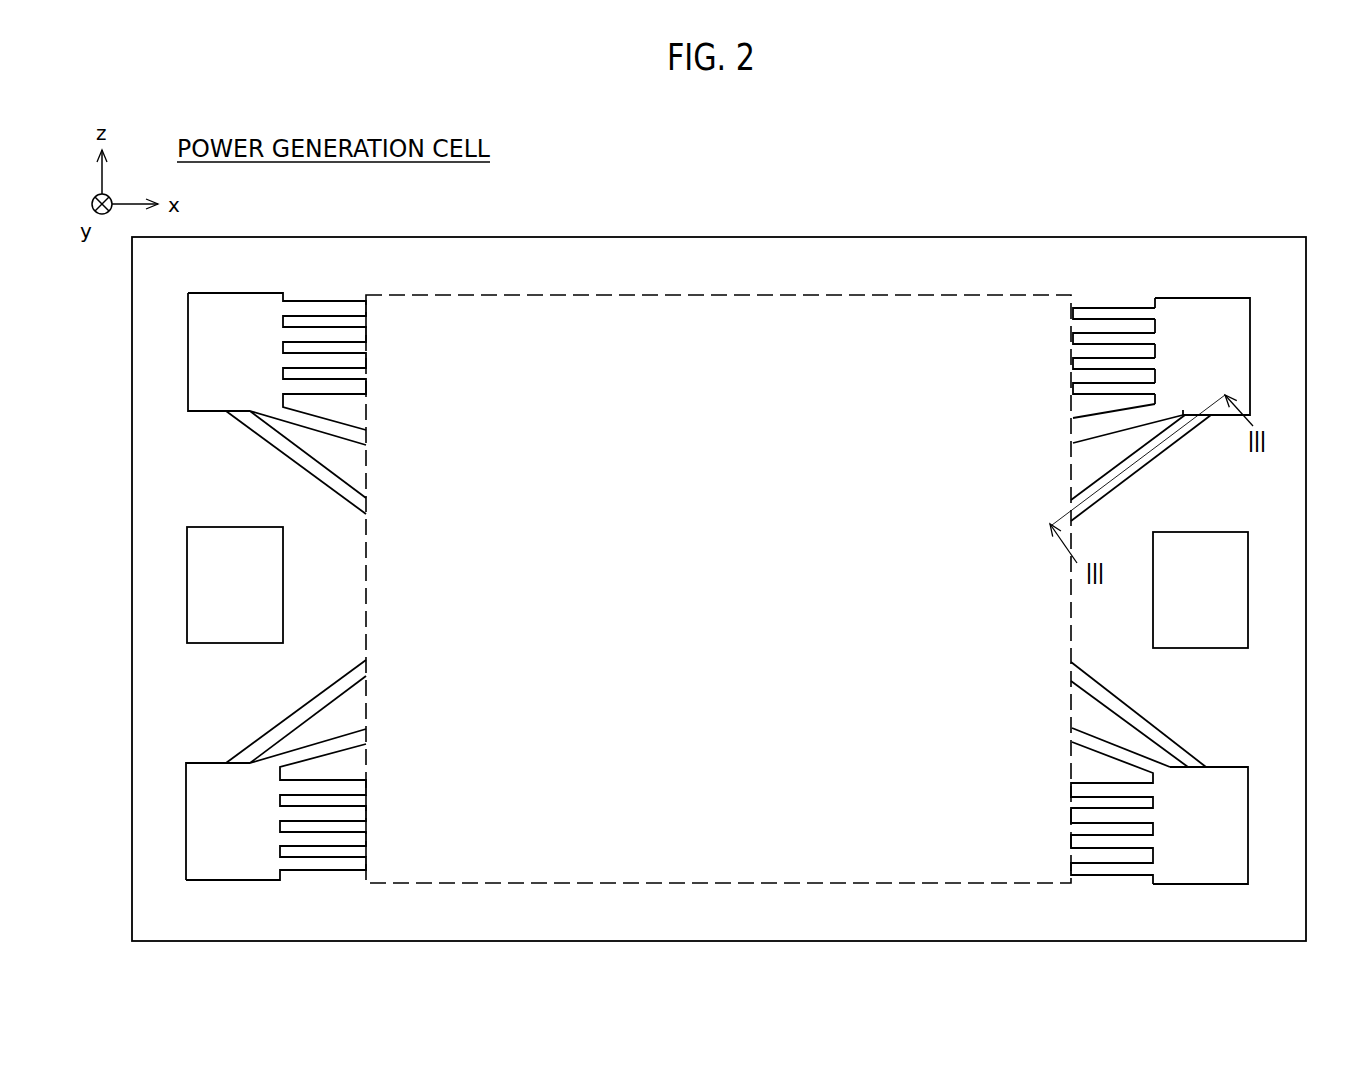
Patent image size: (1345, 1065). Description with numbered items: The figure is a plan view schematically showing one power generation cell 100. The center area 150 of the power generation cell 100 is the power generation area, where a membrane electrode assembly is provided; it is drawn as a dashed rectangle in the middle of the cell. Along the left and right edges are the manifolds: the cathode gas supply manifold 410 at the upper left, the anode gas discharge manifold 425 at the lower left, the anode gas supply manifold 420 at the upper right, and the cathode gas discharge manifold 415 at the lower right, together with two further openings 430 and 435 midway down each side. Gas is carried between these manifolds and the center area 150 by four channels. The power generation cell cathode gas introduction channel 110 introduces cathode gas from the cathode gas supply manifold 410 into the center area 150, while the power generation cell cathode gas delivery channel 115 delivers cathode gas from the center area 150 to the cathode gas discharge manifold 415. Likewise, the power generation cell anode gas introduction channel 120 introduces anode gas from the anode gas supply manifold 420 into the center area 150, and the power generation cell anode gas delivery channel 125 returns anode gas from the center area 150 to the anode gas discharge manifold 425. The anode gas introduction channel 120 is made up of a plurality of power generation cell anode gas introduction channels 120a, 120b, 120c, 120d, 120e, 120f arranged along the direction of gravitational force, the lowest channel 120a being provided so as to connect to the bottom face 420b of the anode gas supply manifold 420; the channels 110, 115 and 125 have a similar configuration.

The power generation cell 100 is at (1185, 170).
The center area 150 is at (935, 295).
The power generation cell cathode gas introduction channel 110 is at (270, 460).
The power generation cell cathode gas delivery channel 115 is at (1173, 718).
The power generation cell anode gas introduction channel 120 is at (1108, 413).
The power generation cell anode gas introduction channel 120a is at (1131, 470).
The power generation cell anode gas introduction channel 120b is at (1063, 443).
The power generation cell anode gas introduction channel 120c is at (1063, 393).
The power generation cell anode gas introduction channel 120d is at (1063, 365).
The power generation cell anode gas introduction channel 120e is at (1063, 338).
The power generation cell anode gas introduction channel 120f is at (1063, 313).
The power generation cell anode gas delivery channel 125 is at (268, 708).
The cathode gas supply manifold 410 is at (253, 369).
The cathode gas discharge manifold 415 is at (1220, 848).
The anode gas supply manifold 420 is at (1223, 371).
The bottom face 420b is at (1182, 414).
The anode gas discharge manifold 425 is at (250, 849).
The fifth pad 430 is at (250, 608).
The sixth pad 435 is at (1213, 613).